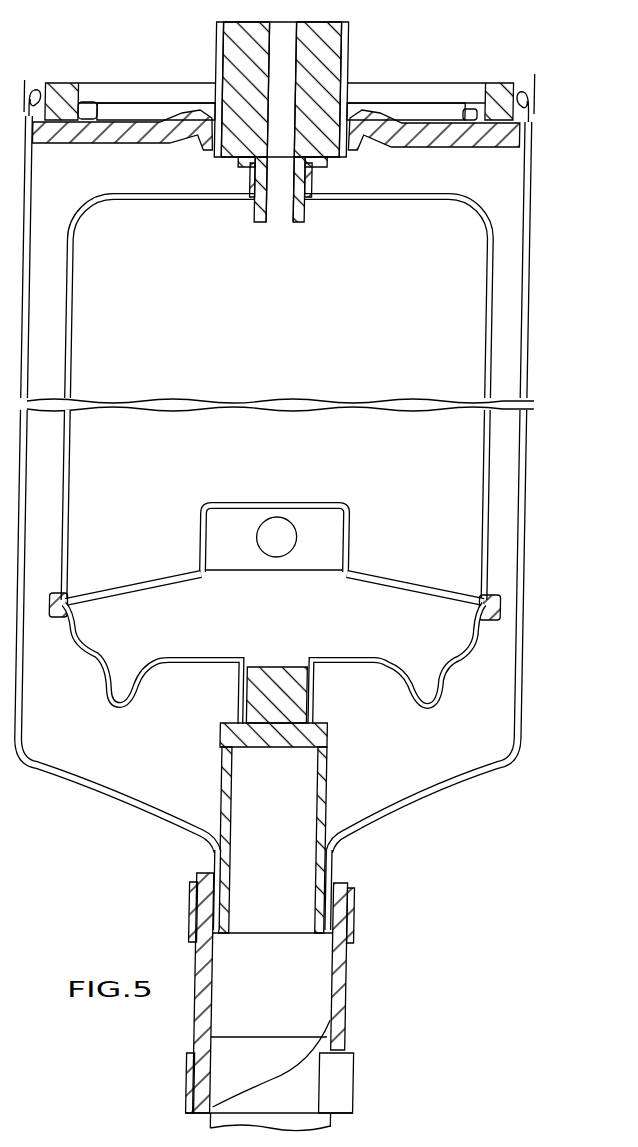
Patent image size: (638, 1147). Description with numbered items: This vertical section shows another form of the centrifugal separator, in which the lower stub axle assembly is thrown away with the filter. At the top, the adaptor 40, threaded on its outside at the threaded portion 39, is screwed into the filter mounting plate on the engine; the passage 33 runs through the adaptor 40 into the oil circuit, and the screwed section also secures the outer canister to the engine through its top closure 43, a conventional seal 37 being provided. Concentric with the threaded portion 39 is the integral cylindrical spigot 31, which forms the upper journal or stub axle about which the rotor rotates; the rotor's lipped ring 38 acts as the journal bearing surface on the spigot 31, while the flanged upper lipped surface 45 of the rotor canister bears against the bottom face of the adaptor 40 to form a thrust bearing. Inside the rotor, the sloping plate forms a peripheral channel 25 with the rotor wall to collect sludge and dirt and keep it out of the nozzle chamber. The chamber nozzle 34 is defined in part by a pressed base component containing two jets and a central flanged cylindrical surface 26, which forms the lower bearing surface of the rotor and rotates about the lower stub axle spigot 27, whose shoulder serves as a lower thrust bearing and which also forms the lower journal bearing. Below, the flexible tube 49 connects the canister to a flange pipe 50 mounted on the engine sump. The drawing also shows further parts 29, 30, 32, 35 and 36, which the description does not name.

The peripheral channel 25 is at (498, 442).
The central flanged cylindrical surface 26 is at (325, 701).
The lower stub axle spigot 27 is at (285, 687).
The housing neck 29 is at (333, 877).
The piston rod 30 is at (317, 785).
The cylindrical spigot 31 is at (277, 221).
The end plate 32 is at (206, 150).
The passage 33 is at (284, 42).
The chamber nozzle 34 is at (148, 603).
The cup 35 is at (339, 503).
The hole 36 is at (286, 522).
The seal 37 is at (147, 100).
The lipped ring 38 is at (316, 167).
The threaded portion 39 is at (218, 47).
The adaptor 40 is at (334, 55).
The top closure 43 is at (58, 143).
The flanged upper lipped surface 45 is at (243, 167).
The flexible tube 49 is at (357, 968).
The flange pipe 50 is at (313, 1117).